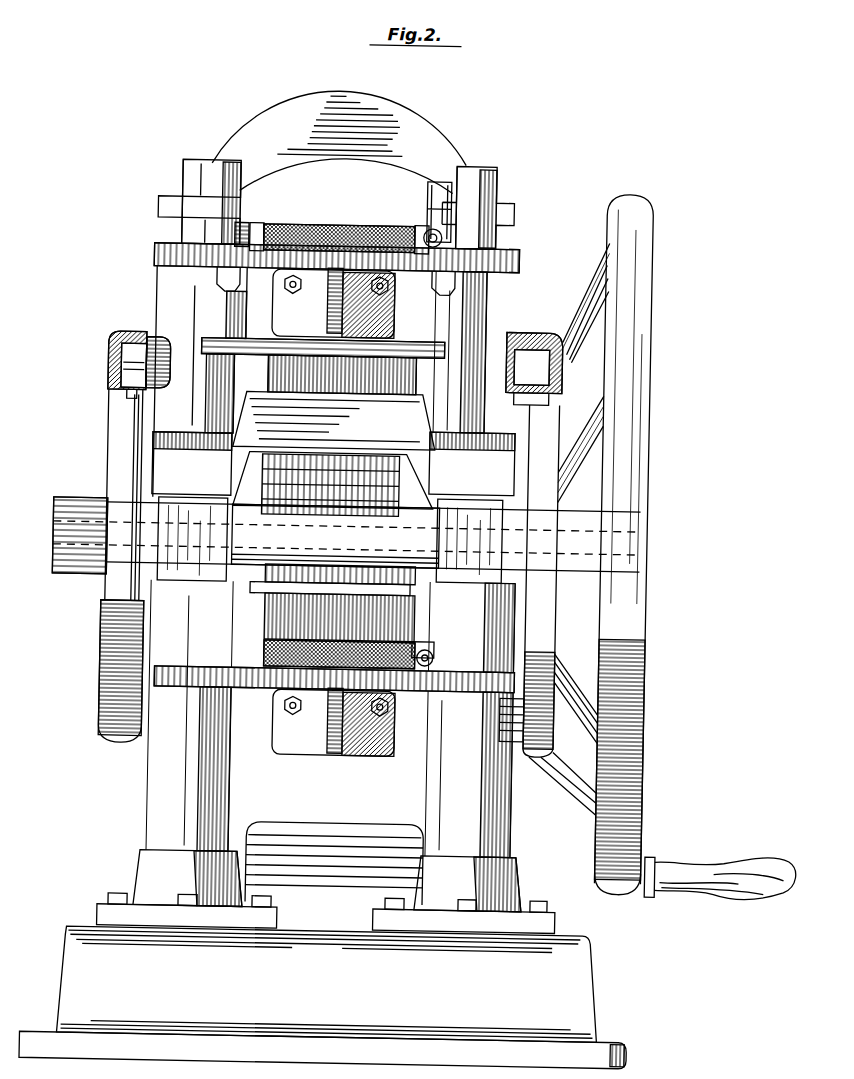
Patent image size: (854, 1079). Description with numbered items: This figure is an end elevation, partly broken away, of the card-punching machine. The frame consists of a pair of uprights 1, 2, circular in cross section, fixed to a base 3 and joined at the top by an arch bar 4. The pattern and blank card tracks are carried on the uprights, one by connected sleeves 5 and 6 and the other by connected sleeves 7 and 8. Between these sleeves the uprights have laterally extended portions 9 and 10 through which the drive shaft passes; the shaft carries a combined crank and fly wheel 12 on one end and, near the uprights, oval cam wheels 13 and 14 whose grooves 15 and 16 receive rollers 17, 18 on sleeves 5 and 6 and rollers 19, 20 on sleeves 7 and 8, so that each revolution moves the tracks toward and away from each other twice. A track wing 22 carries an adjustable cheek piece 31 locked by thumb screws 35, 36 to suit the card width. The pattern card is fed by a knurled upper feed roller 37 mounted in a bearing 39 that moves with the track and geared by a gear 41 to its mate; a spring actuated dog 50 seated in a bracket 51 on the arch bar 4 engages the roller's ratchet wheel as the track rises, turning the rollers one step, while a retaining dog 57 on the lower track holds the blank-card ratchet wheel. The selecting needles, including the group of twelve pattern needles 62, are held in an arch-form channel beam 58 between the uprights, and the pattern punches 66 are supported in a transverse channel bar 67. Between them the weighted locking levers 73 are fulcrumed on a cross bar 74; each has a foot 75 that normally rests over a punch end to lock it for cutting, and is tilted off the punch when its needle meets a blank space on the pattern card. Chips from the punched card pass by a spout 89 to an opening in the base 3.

The upright 1 is at (160, 244).
The upright 2 is at (491, 243).
The base 3 is at (324, 980).
The arch bar 4 is at (340, 142).
The sleeve 5 is at (154, 298).
The sleeve 6 is at (485, 302).
The sleeve 7 is at (165, 772).
The sleeve 8 is at (488, 802).
The laterally extended portion 9 is at (187, 521).
The laterally extended portion 10 is at (475, 522).
The combined crank and fly wheel 12 is at (607, 470).
The cam wheel 13 is at (107, 399).
The cam wheel 14 is at (540, 491).
The groove 15 is at (130, 404).
The groove 16 is at (537, 400).
The roller 17 is at (122, 352).
The roller 18 is at (522, 346).
The roller 19 is at (138, 743).
The roller 20 is at (512, 742).
The wing 22 is at (239, 266).
The cheek piece 31 is at (310, 717).
The thumb screw 35 is at (439, 292).
The thumb screw 36 is at (221, 293).
The feed roller 37 is at (334, 227).
The bearing 39 is at (282, 215).
The gear 41 is at (236, 226).
The spring actuated dog 50 is at (434, 236).
The bracket 51 is at (421, 192).
The retaining dog 57 is at (425, 668).
The channel beam 58 is at (334, 420).
The selecting needles 62 is at (274, 392).
The pattern punches 66 is at (402, 614).
The channel bar 67 is at (258, 592).
The weighted locking lever 73 is at (393, 482).
The cross bar 74 is at (336, 514).
The foot 75 is at (276, 516).
The spout 89 is at (294, 891).